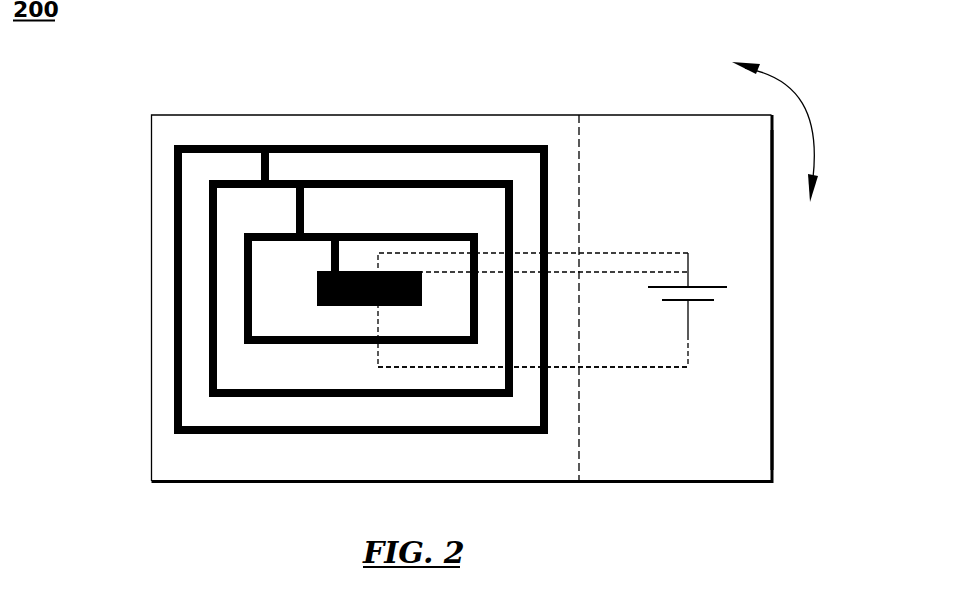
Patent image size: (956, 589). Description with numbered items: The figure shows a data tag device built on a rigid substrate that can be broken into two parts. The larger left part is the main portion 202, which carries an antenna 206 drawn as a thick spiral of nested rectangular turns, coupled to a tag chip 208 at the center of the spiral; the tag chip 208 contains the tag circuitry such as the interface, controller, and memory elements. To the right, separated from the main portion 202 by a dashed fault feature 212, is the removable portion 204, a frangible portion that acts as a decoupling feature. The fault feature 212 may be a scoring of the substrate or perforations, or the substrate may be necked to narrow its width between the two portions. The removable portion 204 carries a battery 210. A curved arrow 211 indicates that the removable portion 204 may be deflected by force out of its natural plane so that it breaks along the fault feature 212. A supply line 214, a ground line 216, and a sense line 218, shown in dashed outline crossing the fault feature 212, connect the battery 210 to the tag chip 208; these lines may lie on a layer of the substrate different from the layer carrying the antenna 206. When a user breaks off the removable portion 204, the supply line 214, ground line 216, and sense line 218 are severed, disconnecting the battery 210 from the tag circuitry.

The main portion 202 is at (150, 288).
The removable portion 204 is at (773, 446).
The antenna 206 is at (174, 393).
The tag chip 208 is at (353, 271).
The battery 210 is at (713, 287).
The deflection direction 211 is at (813, 122).
The fault feature 212 is at (579, 167).
The supply line 214 is at (613, 253).
The ground line 216 is at (612, 367).
The sense line 218 is at (593, 272).